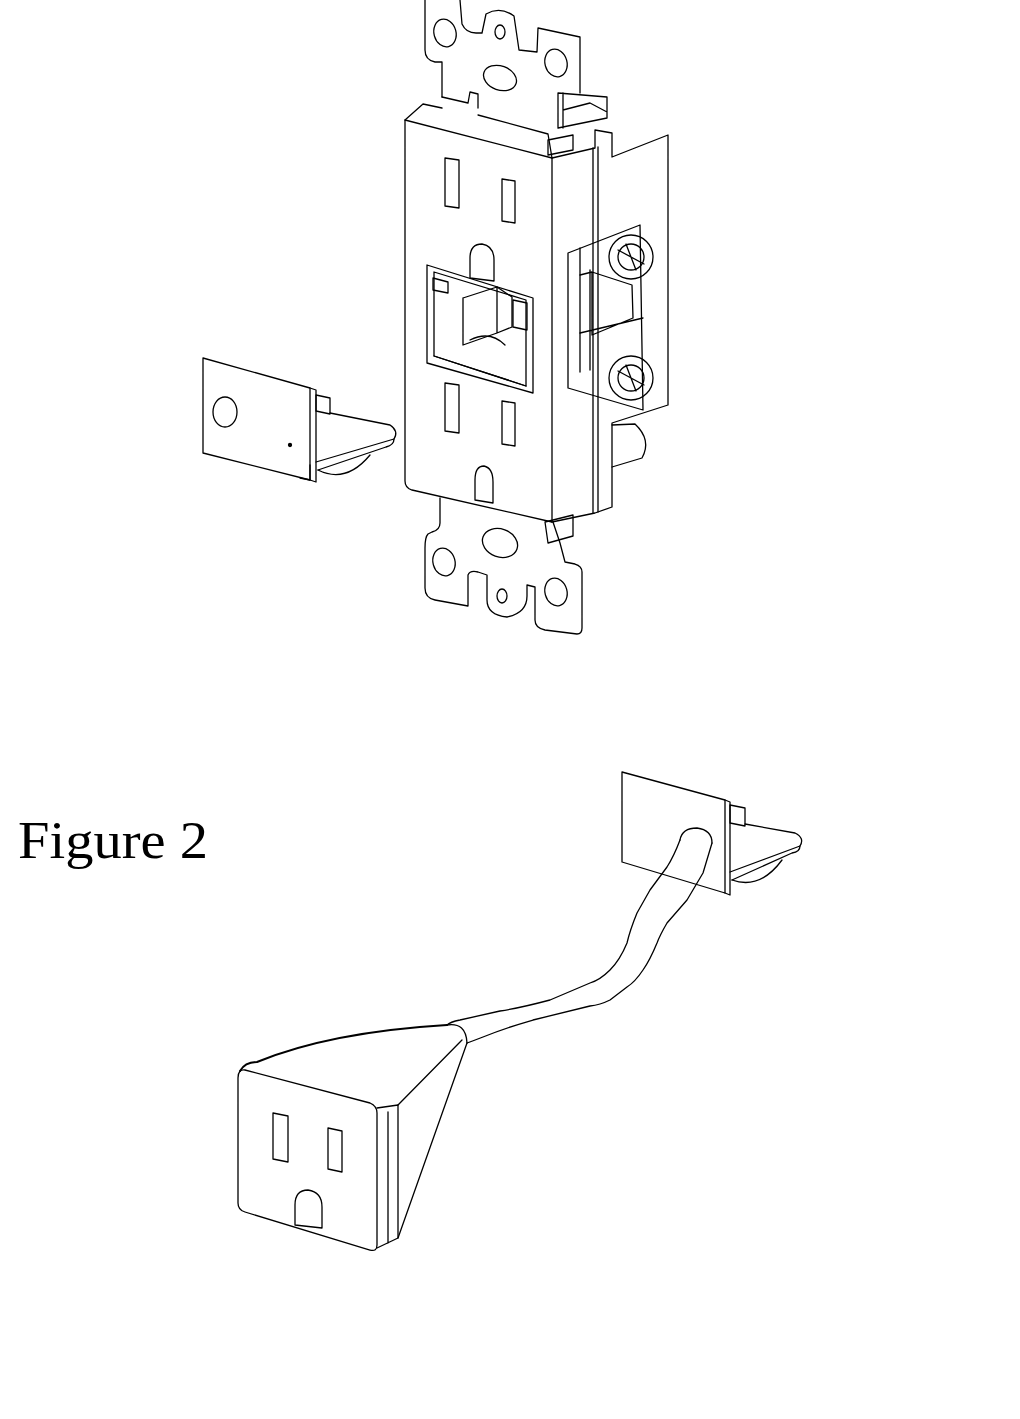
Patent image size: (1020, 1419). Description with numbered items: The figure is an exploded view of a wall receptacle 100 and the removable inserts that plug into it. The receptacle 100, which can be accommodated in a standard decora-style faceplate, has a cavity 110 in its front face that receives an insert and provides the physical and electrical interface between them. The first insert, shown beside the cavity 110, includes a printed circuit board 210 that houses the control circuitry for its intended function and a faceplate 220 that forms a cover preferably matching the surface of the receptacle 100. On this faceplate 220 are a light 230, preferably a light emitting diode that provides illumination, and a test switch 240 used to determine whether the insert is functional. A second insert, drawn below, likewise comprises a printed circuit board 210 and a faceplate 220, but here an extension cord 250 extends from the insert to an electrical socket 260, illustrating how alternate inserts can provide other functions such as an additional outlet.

The receptacle 100 is at (439, 349).
The cavity 110 is at (425, 292).
The printed circuit board 210 is at (357, 403).
The faceplate 220 is at (250, 435).
The light 230 is at (212, 400).
The test switch 240 is at (285, 458).
The extension cord 250 is at (639, 984).
The electrical socket 260 is at (450, 1133).